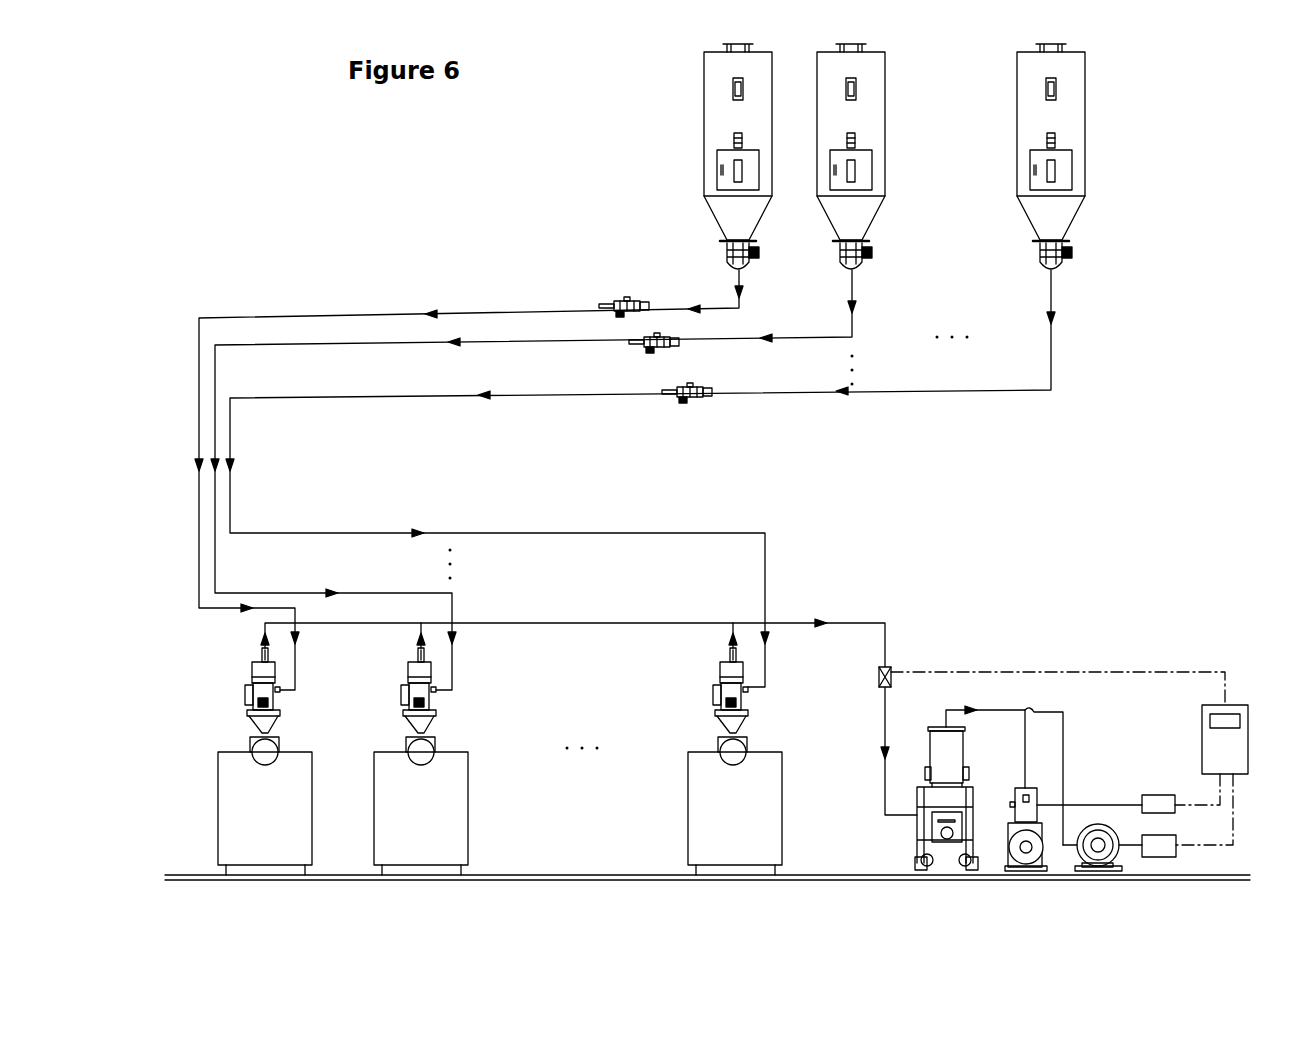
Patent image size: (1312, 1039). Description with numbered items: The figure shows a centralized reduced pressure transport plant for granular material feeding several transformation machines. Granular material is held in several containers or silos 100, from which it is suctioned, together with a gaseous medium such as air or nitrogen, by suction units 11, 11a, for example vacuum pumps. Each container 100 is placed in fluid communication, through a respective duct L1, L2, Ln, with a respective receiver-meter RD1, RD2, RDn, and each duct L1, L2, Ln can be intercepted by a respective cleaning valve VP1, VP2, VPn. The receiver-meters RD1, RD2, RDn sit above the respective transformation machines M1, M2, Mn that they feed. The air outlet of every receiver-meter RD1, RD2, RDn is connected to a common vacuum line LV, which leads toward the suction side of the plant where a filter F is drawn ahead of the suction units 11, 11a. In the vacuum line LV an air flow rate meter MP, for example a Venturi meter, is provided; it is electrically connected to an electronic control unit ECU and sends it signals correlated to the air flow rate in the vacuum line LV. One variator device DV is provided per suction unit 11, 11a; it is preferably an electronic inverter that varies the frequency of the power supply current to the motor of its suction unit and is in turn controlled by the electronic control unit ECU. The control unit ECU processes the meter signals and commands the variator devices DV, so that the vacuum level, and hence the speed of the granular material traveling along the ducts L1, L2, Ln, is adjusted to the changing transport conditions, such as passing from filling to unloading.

The granular material container 100 is at (704, 130).
The duct L1 is at (742, 315).
The duct L2 is at (856, 336).
The duct Ln is at (1058, 389).
The cleaning valve VP1 is at (636, 304).
The cleaning valve VP2 is at (652, 352).
The cleaning valve VPn is at (682, 404).
The common vacuum line LV is at (858, 622).
The air flow rate meter MP is at (878, 672).
The receiver-meter RD1 is at (244, 695).
The receiver-meter RD2 is at (400, 695).
The receiver-meter RDn is at (712, 695).
The transformation machine M1 is at (265, 813).
The transformation machine M2 is at (421, 813).
The transformation machine Mn is at (735, 813).
The filter F is at (966, 752).
The suction unit 11 is at (1018, 838).
The suction unit 11a is at (1087, 832).
The variator device DV is at (1160, 795).
The electronic control unit ECU is at (1244, 705).